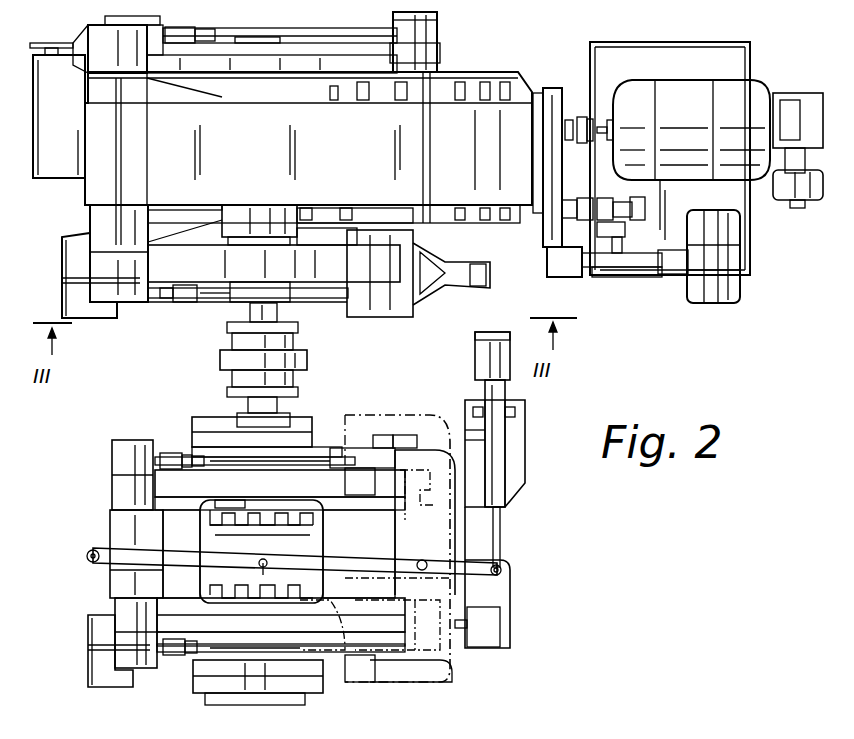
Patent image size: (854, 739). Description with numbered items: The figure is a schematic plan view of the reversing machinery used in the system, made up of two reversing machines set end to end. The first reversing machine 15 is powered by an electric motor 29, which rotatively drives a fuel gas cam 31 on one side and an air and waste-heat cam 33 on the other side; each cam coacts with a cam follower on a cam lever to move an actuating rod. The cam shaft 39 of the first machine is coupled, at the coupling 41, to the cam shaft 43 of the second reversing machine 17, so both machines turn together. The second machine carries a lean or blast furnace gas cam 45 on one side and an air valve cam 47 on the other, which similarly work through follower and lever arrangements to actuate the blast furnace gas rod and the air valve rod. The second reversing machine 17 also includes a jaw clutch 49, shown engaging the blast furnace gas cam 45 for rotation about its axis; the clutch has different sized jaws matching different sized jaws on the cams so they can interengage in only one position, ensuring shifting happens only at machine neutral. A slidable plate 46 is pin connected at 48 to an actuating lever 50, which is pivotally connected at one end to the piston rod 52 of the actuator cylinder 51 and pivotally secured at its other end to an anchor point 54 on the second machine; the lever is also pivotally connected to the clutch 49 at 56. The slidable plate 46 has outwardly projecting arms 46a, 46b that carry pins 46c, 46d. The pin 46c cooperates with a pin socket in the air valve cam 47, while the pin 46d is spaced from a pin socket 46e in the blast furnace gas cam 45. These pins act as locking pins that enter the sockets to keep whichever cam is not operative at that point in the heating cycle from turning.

The No. 1 reversing machine 15 is at (485, 68).
The No. 2 reversing machine 17 is at (180, 670).
The electric motor 29 is at (745, 95).
The fuel gas cam 31 is at (372, 53).
The air and waste-heat cam 33 is at (228, 265).
The cam shaft 39 is at (278, 312).
The coupling 41 is at (225, 362).
The cam shaft 43 is at (250, 410).
The blast furnace gas cam 45 is at (172, 623).
The slidable plate 46 is at (452, 668).
The outwardly projecting arm 46a is at (363, 448).
The outwardly projecting arm 46b is at (385, 668).
The pin 46c is at (355, 472).
The pin 46d is at (362, 658).
The pin socket 46e is at (315, 693).
The air valve cam 47 is at (204, 483).
The pin connection 48 is at (421, 560).
The jaw clutch 49 is at (237, 548).
The actuating lever 50 is at (478, 574).
The actuator cylinder 51 is at (500, 475).
The piston rod 52 is at (501, 530).
The anchor point 54 is at (95, 548).
The pivotal connection 56 is at (263, 565).